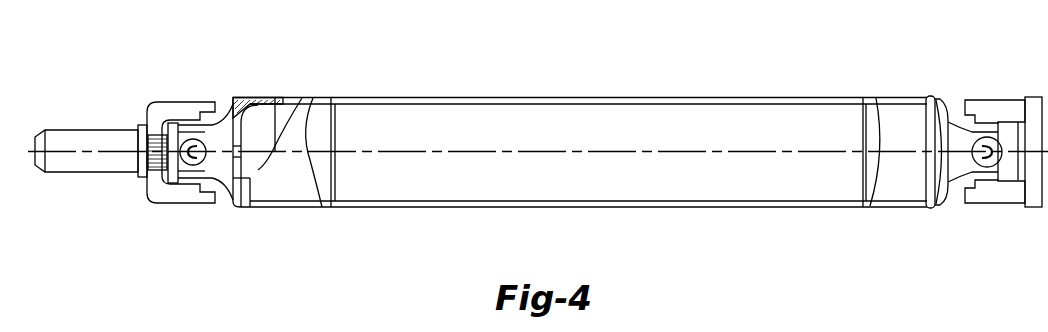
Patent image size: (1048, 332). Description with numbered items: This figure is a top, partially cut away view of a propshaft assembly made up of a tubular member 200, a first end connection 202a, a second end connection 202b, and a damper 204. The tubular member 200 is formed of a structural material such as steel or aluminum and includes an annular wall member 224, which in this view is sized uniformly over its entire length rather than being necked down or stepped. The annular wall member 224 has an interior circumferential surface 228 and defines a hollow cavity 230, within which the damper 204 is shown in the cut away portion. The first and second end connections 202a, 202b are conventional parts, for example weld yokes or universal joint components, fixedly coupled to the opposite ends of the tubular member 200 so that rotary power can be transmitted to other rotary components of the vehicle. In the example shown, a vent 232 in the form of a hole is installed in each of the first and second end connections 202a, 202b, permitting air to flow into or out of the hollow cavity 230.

The tubular member 200 is at (486, 207).
The first end connection 202a is at (234, 103).
The second end connection 202b is at (942, 102).
The damper 204 is at (712, 208).
The annular wall member 224 is at (280, 98).
The interior circumferential surface 228 is at (352, 207).
The hollow cavity 230 is at (873, 124).
The vent 232 is at (238, 155).